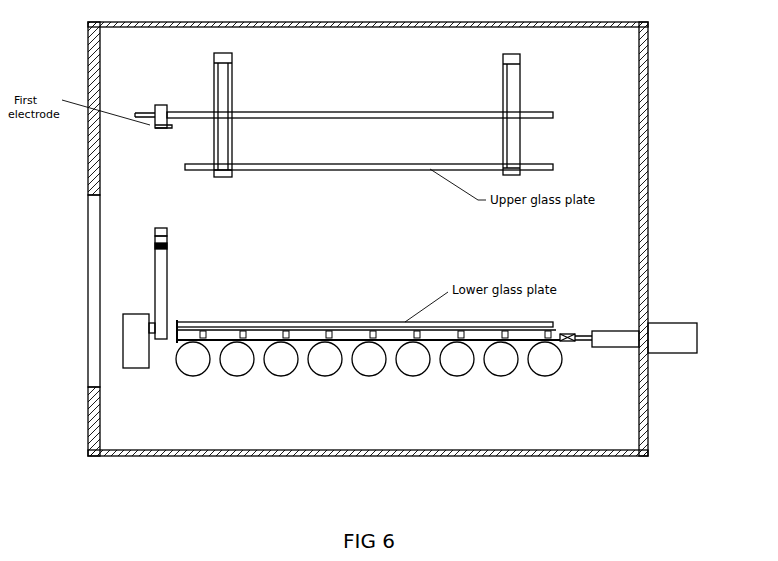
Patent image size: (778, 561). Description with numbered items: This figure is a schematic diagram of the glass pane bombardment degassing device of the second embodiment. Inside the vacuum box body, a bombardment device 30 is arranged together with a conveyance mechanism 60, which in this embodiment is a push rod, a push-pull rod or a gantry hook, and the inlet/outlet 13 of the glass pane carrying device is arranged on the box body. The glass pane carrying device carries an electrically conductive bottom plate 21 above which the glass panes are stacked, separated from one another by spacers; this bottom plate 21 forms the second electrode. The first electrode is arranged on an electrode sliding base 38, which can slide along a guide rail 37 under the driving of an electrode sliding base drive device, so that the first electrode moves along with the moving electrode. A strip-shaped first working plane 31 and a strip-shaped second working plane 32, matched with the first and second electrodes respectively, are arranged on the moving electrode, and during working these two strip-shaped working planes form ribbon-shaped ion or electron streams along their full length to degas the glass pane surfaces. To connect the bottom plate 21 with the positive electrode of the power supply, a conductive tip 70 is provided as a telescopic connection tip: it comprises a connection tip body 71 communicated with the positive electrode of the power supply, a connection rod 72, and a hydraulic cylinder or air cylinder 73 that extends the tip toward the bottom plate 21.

The inlet/outlet 13 is at (90, 292).
The bottom plate 21 is at (560, 337).
The bombardment device 30 is at (117, 247).
The first working plane 31 is at (160, 230).
The second working plane 32 is at (167, 246).
The guide rail 37 is at (300, 113).
The electrode sliding base 38 is at (155, 108).
The conveyance mechanism 60 is at (193, 357).
The conductive tip 70 is at (657, 347).
The connection tip body 71 is at (575, 340).
The connection rod 72 is at (605, 338).
The hydraulic cylinder or air cylinder 73 is at (670, 338).